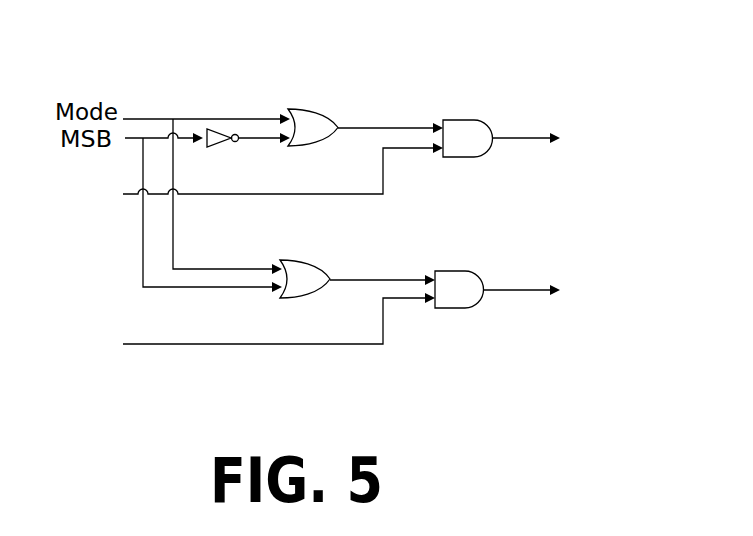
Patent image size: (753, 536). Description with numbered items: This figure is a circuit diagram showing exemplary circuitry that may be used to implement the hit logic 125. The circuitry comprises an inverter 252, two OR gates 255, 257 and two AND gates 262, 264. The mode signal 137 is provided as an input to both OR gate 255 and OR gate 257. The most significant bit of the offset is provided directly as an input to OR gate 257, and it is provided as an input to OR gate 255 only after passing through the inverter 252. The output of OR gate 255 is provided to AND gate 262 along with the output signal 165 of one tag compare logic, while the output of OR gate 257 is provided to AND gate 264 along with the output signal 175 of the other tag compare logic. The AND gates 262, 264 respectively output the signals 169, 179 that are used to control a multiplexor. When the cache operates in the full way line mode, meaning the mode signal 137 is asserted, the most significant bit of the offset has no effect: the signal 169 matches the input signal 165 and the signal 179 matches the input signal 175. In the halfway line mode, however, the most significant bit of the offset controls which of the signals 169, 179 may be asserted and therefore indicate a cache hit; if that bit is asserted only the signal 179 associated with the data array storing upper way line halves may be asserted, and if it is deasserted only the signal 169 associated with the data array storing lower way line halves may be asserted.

The hit logic 125 is at (580, 48).
The mode signal 137 is at (132, 118).
The inverter 252 is at (221, 148).
The output signal of tag compare logic 165 is at (210, 195).
The output signal of tag compare logic 175 is at (205, 343).
The OR gate 255 is at (315, 110).
The OR gate 257 is at (305, 262).
The AND gate 262 is at (458, 120).
The AND gate 264 is at (447, 271).
The signal 169 is at (525, 137).
The signal 179 is at (510, 289).